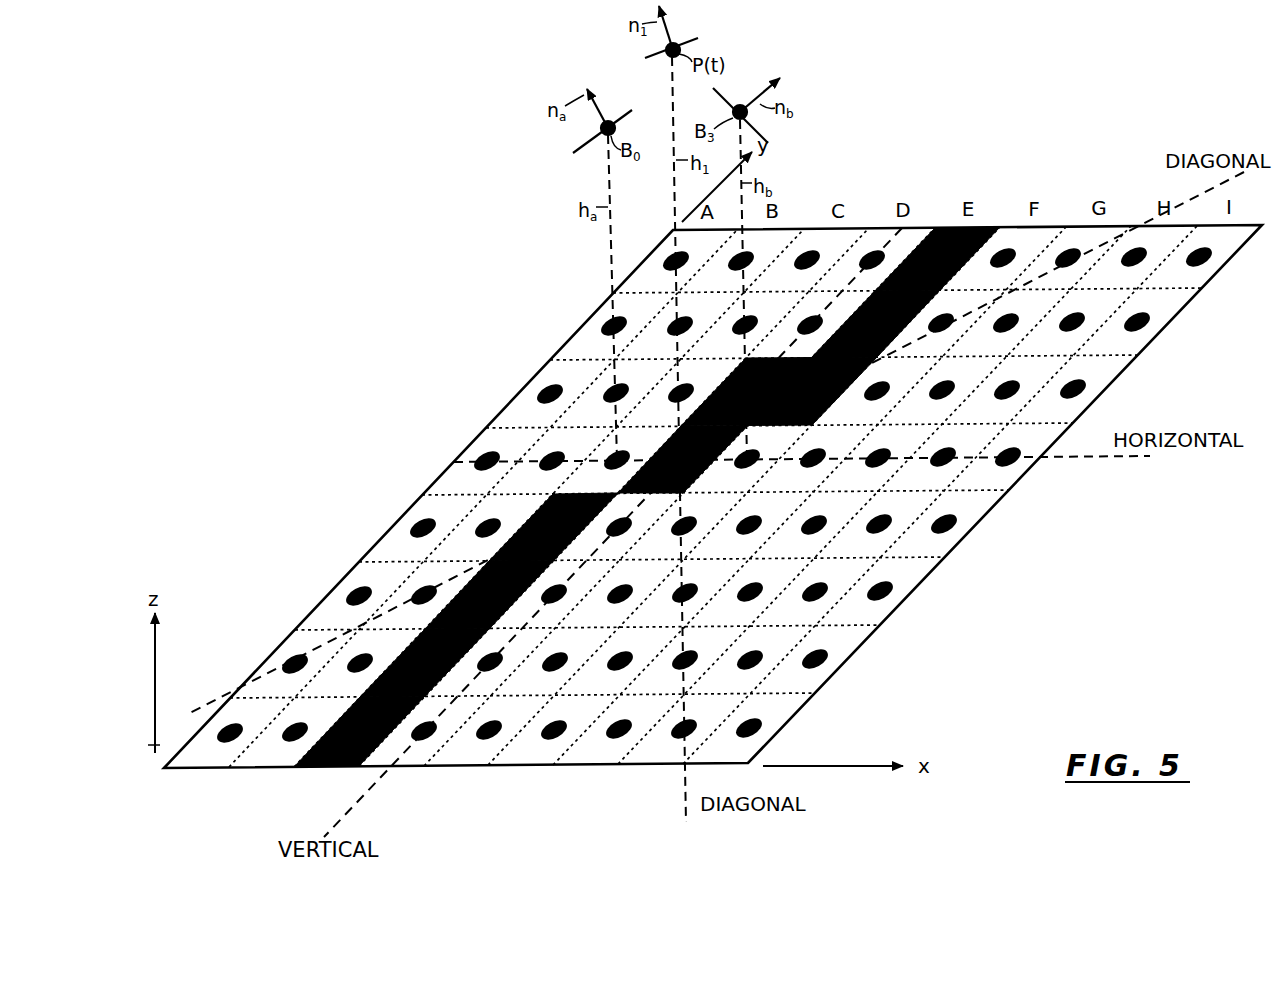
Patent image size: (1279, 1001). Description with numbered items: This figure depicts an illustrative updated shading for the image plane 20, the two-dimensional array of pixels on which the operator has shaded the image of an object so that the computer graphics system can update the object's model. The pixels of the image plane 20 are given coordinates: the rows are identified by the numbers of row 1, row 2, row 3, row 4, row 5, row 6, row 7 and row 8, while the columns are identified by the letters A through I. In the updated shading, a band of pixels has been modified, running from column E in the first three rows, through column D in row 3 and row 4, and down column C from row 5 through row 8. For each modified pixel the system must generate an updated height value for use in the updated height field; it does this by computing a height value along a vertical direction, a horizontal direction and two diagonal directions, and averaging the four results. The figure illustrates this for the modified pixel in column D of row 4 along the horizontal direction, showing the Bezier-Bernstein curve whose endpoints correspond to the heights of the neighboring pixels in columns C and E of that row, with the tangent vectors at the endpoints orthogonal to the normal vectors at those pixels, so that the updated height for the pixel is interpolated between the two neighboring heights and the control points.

The image plane 20 is at (942, 563).
The row 1 is at (915, 258).
The row 2 is at (855, 324).
The row 3 is at (794, 390).
The row 4 is at (728, 458).
The row 5 is at (661, 525).
The row 6 is at (600, 592).
The row 7 is at (534, 660).
The row 8 is at (469, 727).